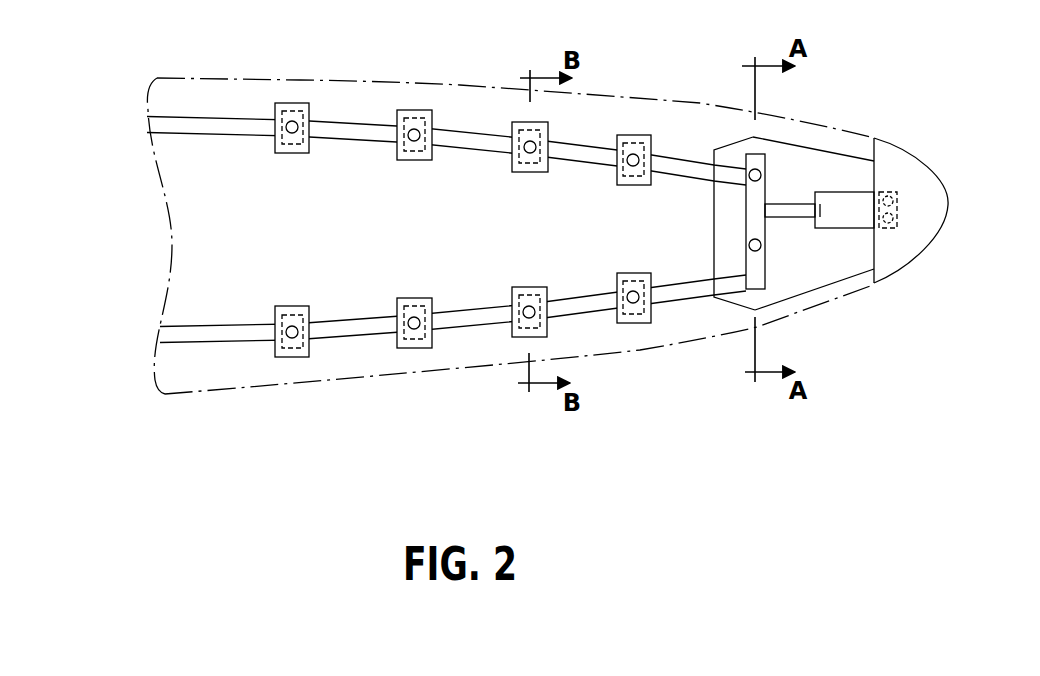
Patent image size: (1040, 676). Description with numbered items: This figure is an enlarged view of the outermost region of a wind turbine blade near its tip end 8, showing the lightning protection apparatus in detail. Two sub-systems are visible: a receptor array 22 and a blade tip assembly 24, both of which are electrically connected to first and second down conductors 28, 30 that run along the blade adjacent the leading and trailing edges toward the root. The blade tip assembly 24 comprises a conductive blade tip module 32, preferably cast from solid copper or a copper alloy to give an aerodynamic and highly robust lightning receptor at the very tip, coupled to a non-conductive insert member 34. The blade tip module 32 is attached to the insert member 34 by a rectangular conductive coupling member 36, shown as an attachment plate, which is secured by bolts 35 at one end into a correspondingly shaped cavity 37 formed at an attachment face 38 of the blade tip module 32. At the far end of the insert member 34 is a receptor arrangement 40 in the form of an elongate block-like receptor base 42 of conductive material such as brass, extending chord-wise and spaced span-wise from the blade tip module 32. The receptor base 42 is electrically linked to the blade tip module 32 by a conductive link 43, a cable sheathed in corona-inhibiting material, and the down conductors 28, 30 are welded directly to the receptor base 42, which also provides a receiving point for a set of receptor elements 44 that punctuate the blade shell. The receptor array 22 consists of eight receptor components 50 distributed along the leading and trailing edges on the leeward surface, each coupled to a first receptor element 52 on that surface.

The tip end 8 is at (888, 197).
The receptor array 22 is at (398, 392).
The blade tip assembly 24 is at (881, 197).
The first down conductor 28 is at (680, 164).
The second down conductor 30 is at (670, 297).
The blade tip module 32 is at (917, 260).
The insert member 34 is at (830, 272).
The bolts 35 is at (889, 193).
The coupling member 36 is at (848, 200).
The cavity 37 is at (898, 200).
The attachment face 38 is at (860, 255).
The receptor arrangement 40 is at (742, 123).
The receptor base 42 is at (758, 290).
The conductive link 43 is at (797, 204).
The receptor elements 44 is at (758, 170).
The receptor components 50 is at (283, 98).
The first receptor element 52 is at (292, 326).